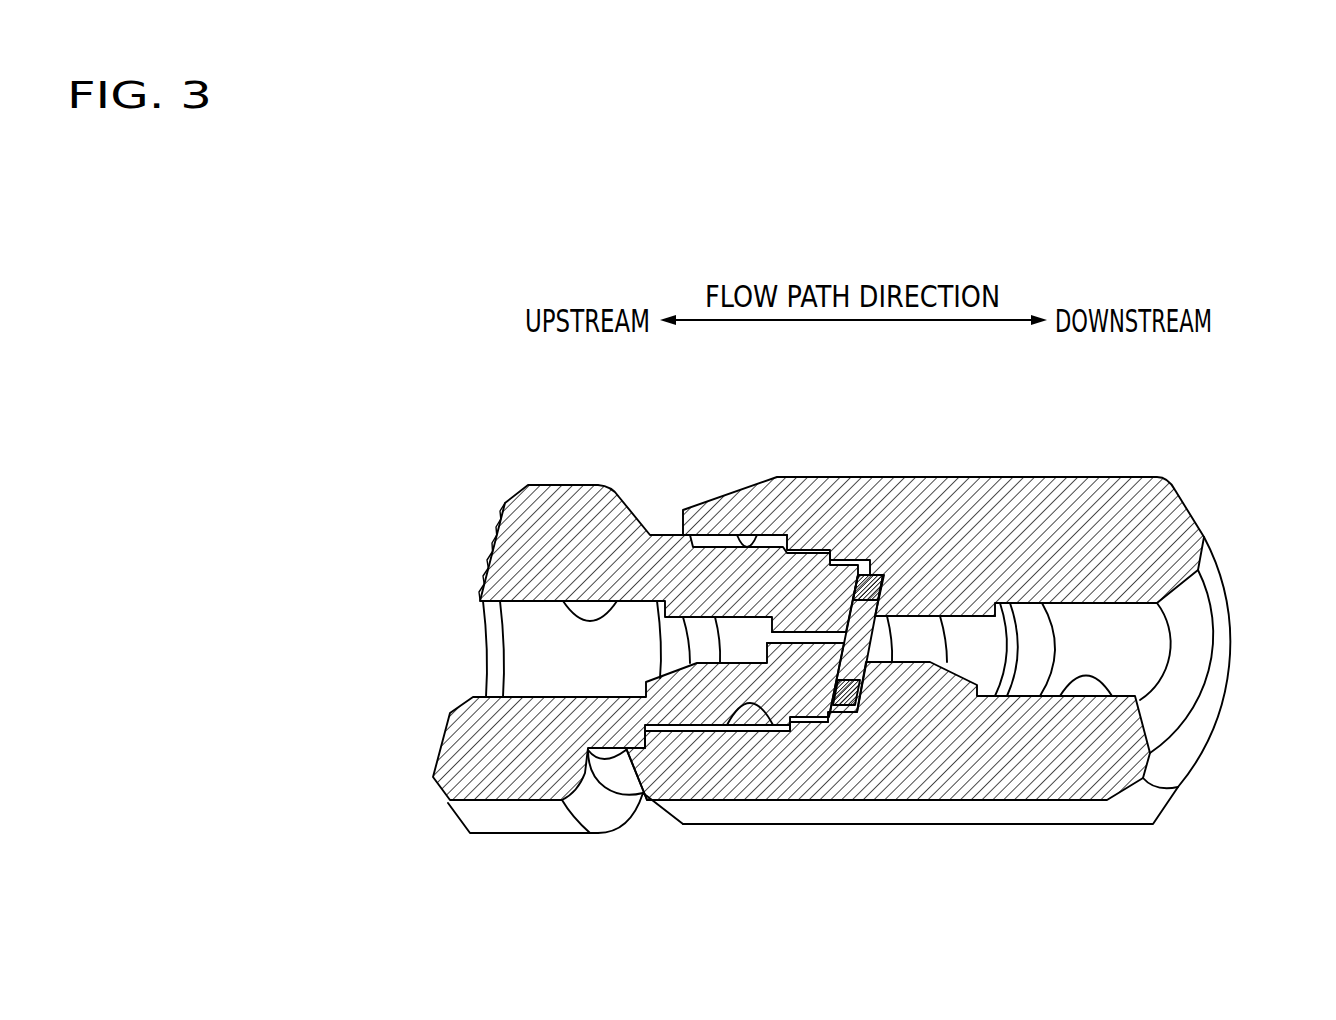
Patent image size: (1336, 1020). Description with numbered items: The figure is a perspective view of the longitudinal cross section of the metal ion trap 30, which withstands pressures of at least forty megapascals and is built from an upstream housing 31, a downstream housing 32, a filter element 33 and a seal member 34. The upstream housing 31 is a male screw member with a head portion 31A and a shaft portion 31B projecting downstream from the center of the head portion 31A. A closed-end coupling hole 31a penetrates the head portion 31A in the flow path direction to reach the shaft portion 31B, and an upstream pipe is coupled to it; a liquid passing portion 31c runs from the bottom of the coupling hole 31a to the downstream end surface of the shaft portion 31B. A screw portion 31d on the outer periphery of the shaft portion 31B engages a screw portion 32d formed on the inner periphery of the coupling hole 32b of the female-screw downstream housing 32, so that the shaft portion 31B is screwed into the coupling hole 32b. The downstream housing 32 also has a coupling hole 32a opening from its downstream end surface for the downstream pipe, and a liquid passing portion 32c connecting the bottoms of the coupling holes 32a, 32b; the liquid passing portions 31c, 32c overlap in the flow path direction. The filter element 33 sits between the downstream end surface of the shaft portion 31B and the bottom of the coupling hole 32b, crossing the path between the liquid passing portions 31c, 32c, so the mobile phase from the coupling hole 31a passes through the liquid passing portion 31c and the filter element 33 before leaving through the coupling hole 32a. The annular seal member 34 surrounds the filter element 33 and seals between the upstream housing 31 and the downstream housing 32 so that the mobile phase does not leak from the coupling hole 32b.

The metal ion trap 30 is at (1335, 331).
The upstream housing 31 is at (606, 908).
The head portion 31A is at (510, 833).
The shaft portion 31B is at (603, 762).
The coupling hole 31a is at (562, 601).
The liquid passing portion 31c is at (797, 637).
The screw portion 31d is at (683, 727).
The downstream housing 32 is at (836, 824).
The coupling hole 32a is at (1060, 696).
The coupling hole 32b is at (716, 760).
The liquid passing portion 32c is at (937, 616).
The screw portion 32d is at (728, 535).
The filter element 33 is at (869, 574).
The seal member 34 is at (849, 564).